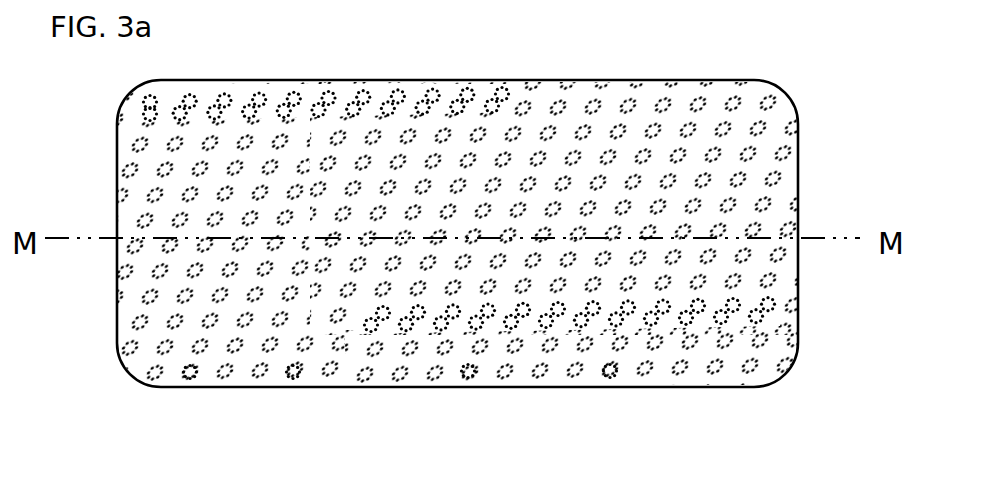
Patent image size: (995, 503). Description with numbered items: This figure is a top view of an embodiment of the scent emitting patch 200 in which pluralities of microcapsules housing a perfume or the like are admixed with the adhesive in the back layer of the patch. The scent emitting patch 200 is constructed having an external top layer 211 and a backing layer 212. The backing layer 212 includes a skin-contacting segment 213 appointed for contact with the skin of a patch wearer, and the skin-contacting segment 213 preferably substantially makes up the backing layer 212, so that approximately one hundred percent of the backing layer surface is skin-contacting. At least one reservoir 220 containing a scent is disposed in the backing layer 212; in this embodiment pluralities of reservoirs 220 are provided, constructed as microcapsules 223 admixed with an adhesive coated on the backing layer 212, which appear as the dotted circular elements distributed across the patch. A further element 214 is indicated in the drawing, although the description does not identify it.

The scent emitting patch 200 is at (730, 376).
The external top layer 211 is at (612, 368).
The backing layer 212 is at (290, 386).
The skin-contacting segment 213 is at (192, 361).
The lattice site 214 is at (452, 364).
The reservoir 220 is at (178, 159).
The microcapsules 223 is at (310, 163).